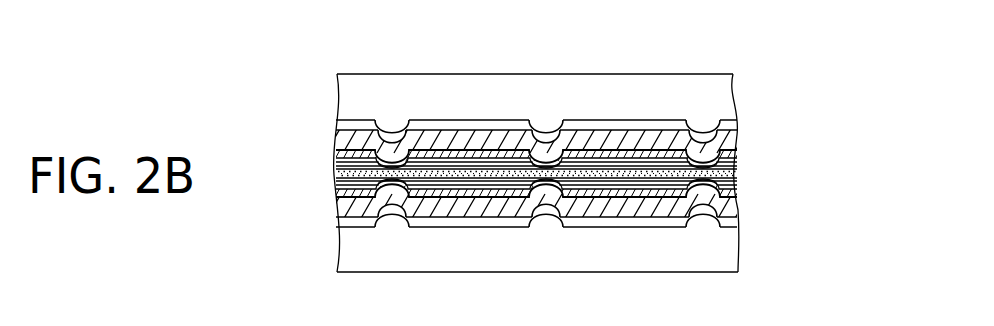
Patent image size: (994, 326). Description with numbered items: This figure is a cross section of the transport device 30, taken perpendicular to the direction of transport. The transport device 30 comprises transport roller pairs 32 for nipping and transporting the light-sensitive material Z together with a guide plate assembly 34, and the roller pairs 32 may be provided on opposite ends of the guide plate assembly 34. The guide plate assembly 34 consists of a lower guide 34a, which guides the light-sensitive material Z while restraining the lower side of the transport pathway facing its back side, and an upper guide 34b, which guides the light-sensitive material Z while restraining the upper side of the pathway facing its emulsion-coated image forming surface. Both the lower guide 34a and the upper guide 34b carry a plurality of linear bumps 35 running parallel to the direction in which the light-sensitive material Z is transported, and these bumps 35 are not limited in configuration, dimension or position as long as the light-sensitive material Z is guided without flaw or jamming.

The transport device 30 is at (796, 100).
The transport roller pairs 32 is at (362, 88).
The guide plate assembly 34 is at (658, 104).
The lower guide 34a is at (753, 188).
The upper guide 34b is at (624, 128).
The bumps 35 is at (549, 116).
The light-sensitive material Z is at (451, 178).